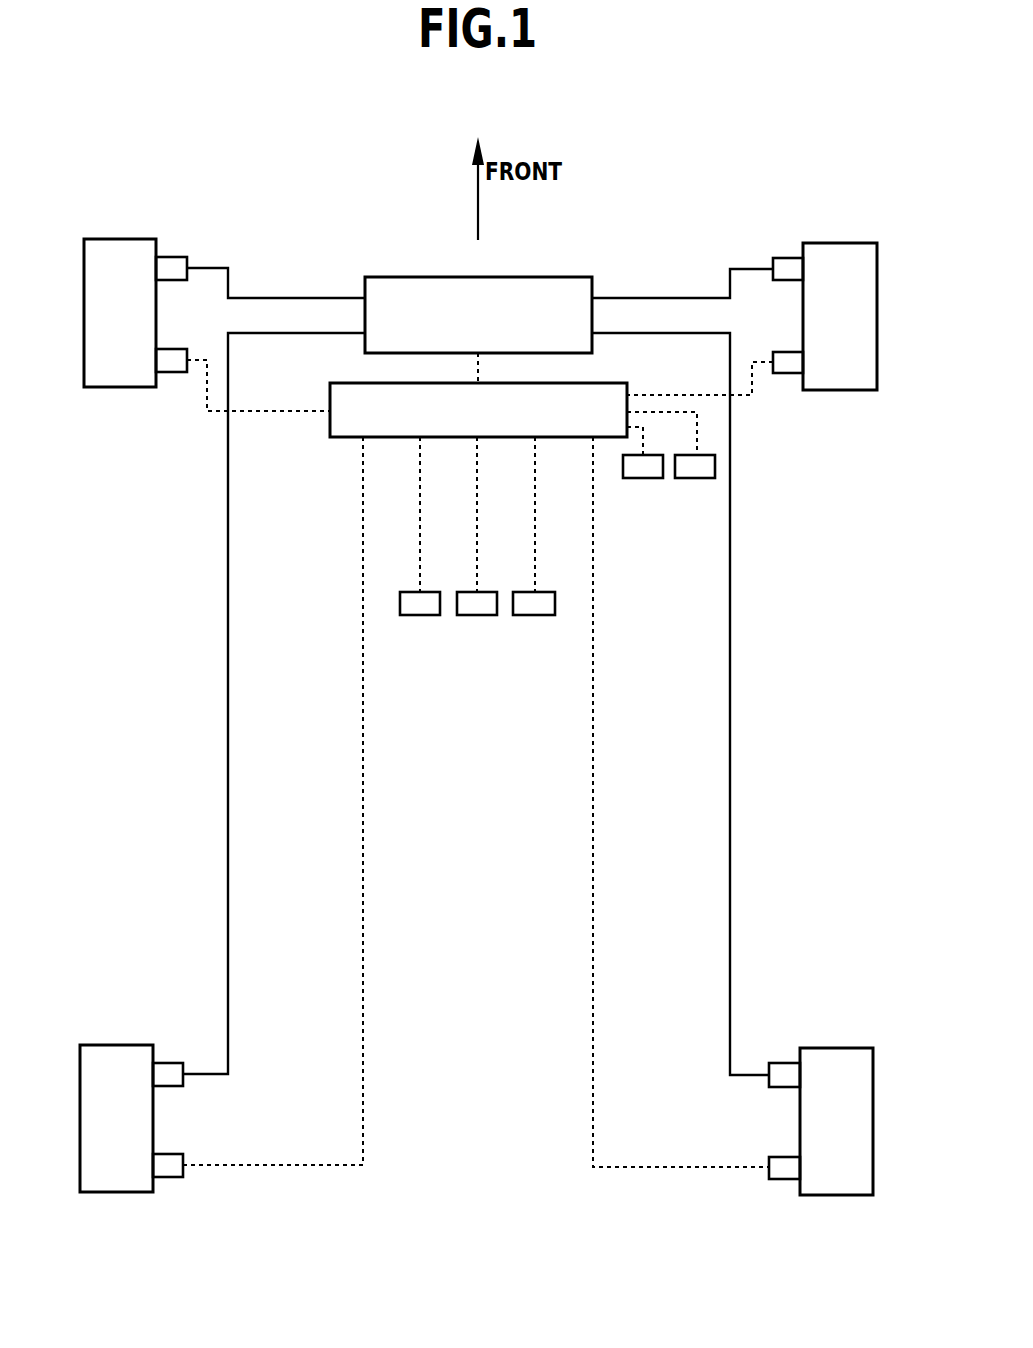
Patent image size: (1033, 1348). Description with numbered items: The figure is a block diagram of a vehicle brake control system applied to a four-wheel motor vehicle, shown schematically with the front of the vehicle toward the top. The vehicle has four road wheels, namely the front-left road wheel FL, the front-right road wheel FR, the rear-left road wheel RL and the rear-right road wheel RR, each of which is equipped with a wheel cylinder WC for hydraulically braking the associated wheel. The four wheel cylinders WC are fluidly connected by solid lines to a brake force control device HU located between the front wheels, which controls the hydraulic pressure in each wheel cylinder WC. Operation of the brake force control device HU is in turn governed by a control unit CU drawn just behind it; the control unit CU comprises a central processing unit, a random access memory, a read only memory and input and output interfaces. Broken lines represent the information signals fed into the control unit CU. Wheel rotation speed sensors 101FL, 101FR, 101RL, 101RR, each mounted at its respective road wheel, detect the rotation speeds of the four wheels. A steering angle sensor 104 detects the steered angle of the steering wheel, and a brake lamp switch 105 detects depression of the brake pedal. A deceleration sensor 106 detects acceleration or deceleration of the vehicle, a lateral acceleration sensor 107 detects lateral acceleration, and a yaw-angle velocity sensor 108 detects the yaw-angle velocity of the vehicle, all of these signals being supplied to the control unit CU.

The front-left road wheel FL is at (104, 239).
The front-right road wheel FR is at (833, 243).
The rear-left road wheel RL is at (102, 1045).
The rear-right road wheel RR is at (828, 1048).
The wheel cylinder WC is at (170, 263).
The brake force control device HU is at (552, 277).
The control unit CU is at (612, 383).
The wheel rotation speed sensor 101FL is at (172, 362).
The wheel rotation speed sensor 101FR is at (787, 372).
The wheel rotation speed sensor 101RL is at (170, 1168).
The wheel rotation speed sensor 101RR is at (783, 1172).
The steering angle sensor 104 is at (636, 470).
The brake lamp switch 105 is at (705, 470).
The deceleration sensor 106 is at (413, 605).
The lateral acceleration sensor 107 is at (482, 605).
The yaw-angle velocity sensor 108 is at (545, 605).